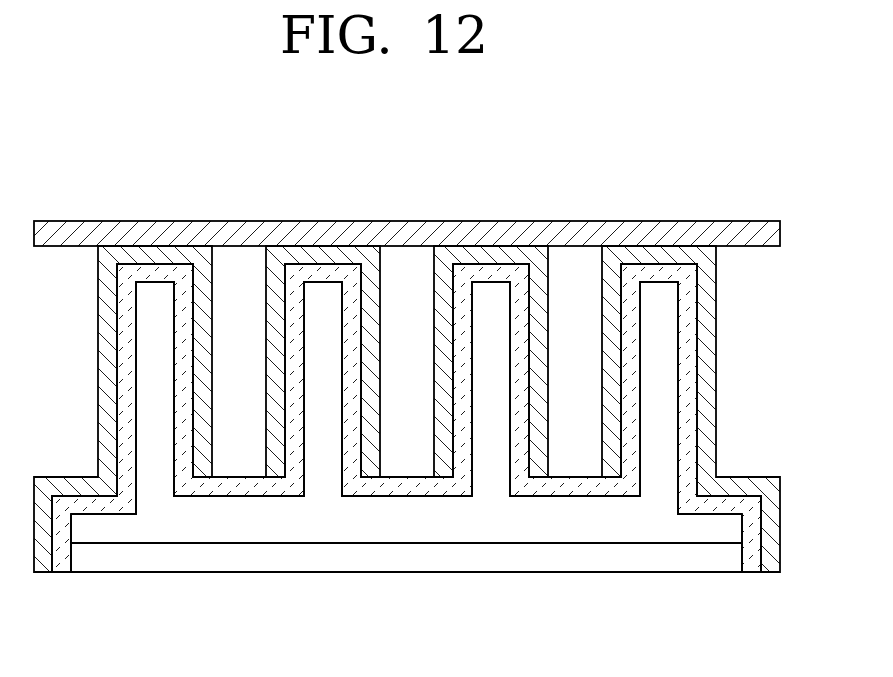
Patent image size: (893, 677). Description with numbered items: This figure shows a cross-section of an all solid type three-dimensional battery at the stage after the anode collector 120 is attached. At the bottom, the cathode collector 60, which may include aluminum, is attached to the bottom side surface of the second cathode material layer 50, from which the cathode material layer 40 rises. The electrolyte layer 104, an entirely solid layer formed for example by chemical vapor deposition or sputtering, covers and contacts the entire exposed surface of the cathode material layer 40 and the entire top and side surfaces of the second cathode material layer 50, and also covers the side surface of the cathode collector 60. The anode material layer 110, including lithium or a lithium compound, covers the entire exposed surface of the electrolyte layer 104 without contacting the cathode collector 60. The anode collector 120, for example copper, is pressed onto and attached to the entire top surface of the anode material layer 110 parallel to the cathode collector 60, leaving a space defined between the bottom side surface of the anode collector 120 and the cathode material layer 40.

The anode collector 120 is at (657, 221).
The anode material layer 110 is at (707, 300).
The electrolyte layer 104 is at (686, 346).
The cathode material layer 40 is at (668, 436).
The second cathode material layer 50 is at (403, 528).
The cathode collector 60 is at (272, 563).